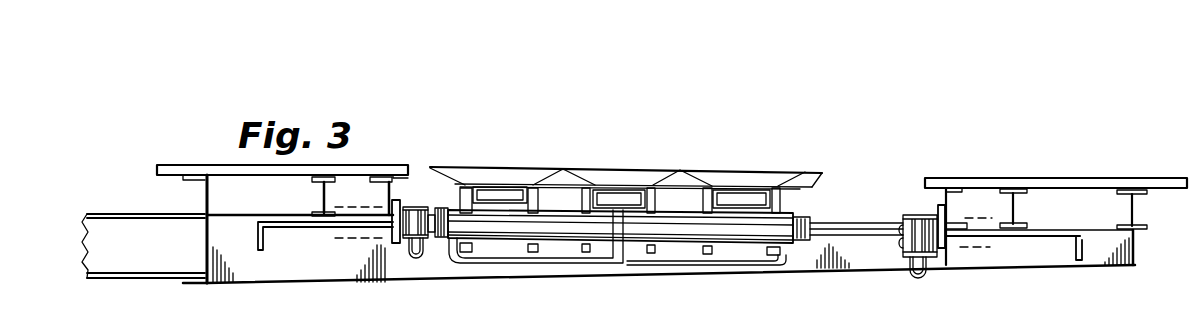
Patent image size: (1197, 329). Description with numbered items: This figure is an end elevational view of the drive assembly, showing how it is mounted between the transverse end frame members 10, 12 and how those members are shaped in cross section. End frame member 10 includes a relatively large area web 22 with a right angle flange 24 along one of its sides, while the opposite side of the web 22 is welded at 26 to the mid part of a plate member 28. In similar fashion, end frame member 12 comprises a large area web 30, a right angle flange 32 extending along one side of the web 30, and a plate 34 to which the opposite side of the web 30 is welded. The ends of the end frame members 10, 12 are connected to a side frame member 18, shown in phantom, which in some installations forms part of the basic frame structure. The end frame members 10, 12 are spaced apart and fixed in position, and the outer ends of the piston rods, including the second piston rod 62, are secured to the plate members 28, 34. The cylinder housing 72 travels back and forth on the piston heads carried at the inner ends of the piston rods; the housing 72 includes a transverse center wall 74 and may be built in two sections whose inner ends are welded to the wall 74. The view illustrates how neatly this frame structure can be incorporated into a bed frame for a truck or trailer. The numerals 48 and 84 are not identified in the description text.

The transverse end frame member 10 is at (302, 240).
The transverse end frame member 12 is at (1007, 250).
The side frame member 18 is at (553, 262).
The web 22 is at (328, 229).
The right angle flange 24 is at (253, 245).
The weld 26 is at (381, 238).
The plate member 28 is at (397, 190).
The web 30 is at (1043, 240).
The right angle flange 32 is at (1083, 248).
The plate 34 is at (955, 243).
The U-bolt 48 is at (438, 283).
The second piston rod 62 is at (867, 228).
The cylinder housing 72 is at (683, 250).
The transverse center wall 74 is at (617, 262).
The coupling 84 is at (485, 268).